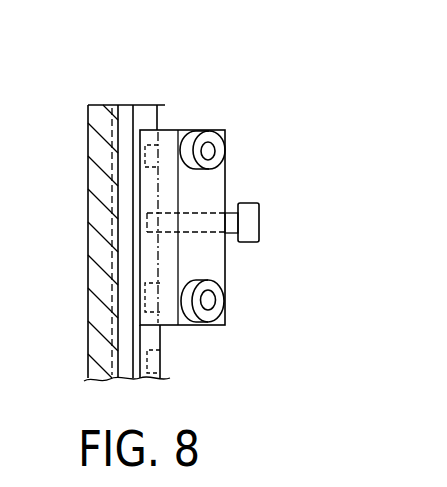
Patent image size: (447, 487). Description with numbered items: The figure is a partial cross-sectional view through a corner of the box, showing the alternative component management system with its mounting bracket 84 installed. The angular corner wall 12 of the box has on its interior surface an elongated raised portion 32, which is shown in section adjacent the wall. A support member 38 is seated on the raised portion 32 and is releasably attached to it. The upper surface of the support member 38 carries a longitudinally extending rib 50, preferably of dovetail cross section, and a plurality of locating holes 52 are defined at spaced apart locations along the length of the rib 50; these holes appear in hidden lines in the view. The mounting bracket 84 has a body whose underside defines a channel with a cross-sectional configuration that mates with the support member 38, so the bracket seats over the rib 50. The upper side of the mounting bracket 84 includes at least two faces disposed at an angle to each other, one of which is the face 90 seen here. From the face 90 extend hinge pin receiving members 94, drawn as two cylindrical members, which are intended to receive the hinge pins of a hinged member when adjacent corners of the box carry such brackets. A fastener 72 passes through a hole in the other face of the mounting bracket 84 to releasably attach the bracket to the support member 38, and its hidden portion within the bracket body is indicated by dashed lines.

The corner wall 12 is at (88, 127).
The raised portion 32 is at (116, 104).
The support member 38 is at (132, 86).
The rib 50 is at (149, 105).
The locating holes 52 is at (147, 290).
The fastener 72 is at (258, 203).
The mounting bracket 84 is at (198, 121).
The face 90 is at (214, 266).
The hinge pin receiving members 94 is at (208, 131).